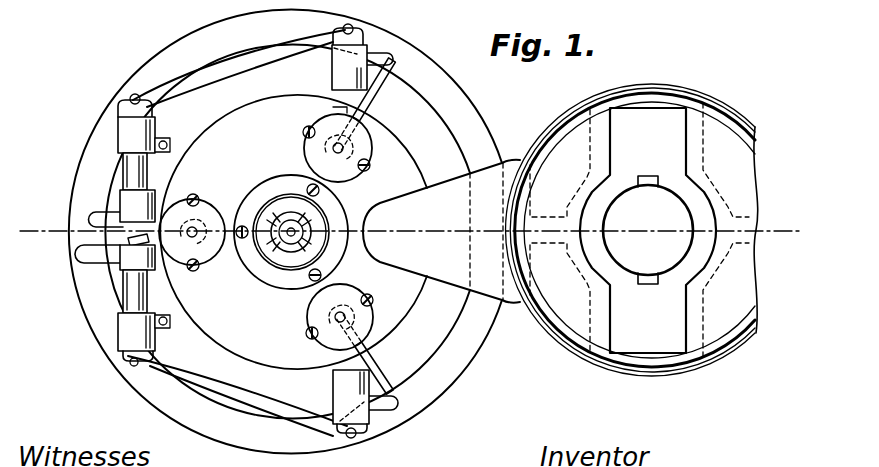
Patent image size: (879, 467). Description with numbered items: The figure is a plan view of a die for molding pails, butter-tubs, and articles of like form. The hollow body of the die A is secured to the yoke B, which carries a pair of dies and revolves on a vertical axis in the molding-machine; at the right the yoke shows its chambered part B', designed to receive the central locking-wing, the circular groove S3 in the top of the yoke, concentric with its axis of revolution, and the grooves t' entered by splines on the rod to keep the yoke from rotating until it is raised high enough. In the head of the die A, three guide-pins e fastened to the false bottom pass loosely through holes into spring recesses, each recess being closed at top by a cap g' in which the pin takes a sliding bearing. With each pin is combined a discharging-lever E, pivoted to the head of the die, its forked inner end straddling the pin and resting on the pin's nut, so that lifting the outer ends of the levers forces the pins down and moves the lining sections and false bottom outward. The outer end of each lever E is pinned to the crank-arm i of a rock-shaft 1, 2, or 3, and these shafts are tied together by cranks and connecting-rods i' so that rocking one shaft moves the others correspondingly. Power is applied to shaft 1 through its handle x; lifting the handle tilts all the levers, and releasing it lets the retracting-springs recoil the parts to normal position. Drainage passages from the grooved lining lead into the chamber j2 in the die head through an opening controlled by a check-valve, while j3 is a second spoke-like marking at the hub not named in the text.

The body of the die A is at (270, 232).
The yoke B is at (644, 230).
The chambered part of yoke B' is at (648, 230).
The discharging-lever E is at (261, 226).
The guide-pin e is at (266, 232).
The cap g' is at (266, 228).
The crank-arm i is at (251, 229).
The connecting-rod i' is at (237, 233).
The chamber j2 is at (283, 216).
The spoke j3 is at (278, 248).
The groove t' is at (648, 230).
The handle x is at (84, 264).
The circular groove S3 is at (758, 326).
The rock-shaft 1 is at (144, 158).
The rock-shaft 2 is at (349, 57).
The rock-shaft 3 is at (351, 404).